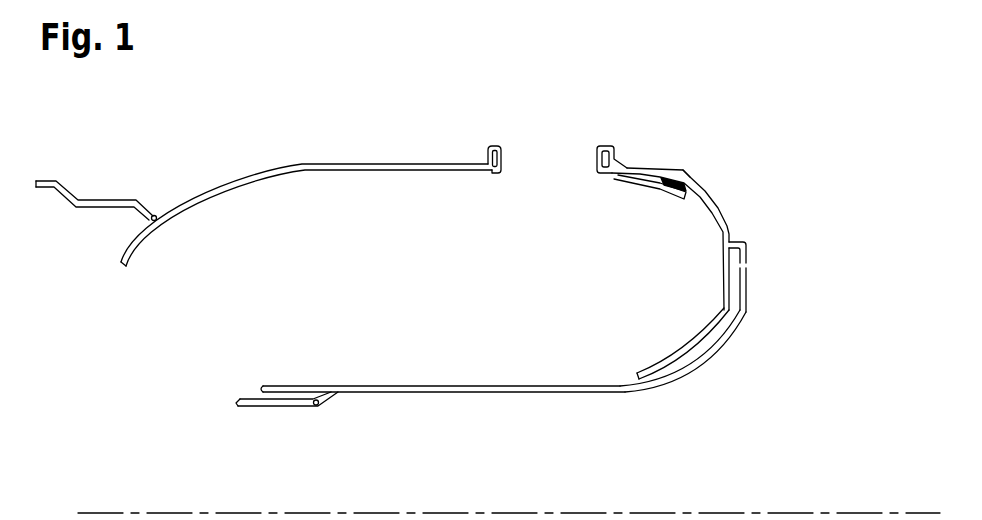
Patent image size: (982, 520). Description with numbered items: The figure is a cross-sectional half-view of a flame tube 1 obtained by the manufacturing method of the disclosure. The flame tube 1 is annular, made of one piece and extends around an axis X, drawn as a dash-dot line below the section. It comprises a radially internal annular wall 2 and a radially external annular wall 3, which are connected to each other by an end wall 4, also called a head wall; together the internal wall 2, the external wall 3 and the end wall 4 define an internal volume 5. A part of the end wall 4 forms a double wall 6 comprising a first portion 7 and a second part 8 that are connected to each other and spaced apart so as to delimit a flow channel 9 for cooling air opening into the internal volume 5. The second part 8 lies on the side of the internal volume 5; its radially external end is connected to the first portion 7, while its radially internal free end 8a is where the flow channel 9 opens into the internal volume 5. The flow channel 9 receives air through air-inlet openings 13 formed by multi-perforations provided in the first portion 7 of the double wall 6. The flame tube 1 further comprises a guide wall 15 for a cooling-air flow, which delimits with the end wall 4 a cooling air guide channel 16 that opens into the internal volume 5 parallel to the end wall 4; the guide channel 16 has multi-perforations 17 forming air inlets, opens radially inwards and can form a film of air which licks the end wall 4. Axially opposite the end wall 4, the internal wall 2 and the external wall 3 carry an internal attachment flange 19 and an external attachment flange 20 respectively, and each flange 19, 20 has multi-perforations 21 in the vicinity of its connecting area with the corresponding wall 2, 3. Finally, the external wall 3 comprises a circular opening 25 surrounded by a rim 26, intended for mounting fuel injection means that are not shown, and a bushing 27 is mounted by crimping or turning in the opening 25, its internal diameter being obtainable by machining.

The flame tube 1 is at (717, 146).
The radially internal annular wall 2 is at (468, 393).
The radially external annular wall 3 is at (406, 164).
The end wall 4 is at (712, 202).
The internal volume 5 is at (408, 299).
The double wall 6 is at (769, 306).
The first portion 7 is at (706, 350).
The second part 8 is at (695, 338).
The free end 8a is at (637, 374).
The flow channel 9 is at (670, 372).
The air-inlet openings 13 is at (748, 262).
The guide wall 15 is at (676, 195).
The cooling air guide channel 16 is at (690, 183).
The multi-perforations 17 is at (688, 176).
The internal attachment flange 19 is at (270, 410).
The external attachment flange 20 is at (123, 200).
The multi-perforations 21 is at (155, 215).
The circular opening 25 is at (542, 152).
The rim 26 is at (488, 160).
The bushing 27 is at (503, 166).
The axis X is at (647, 512).